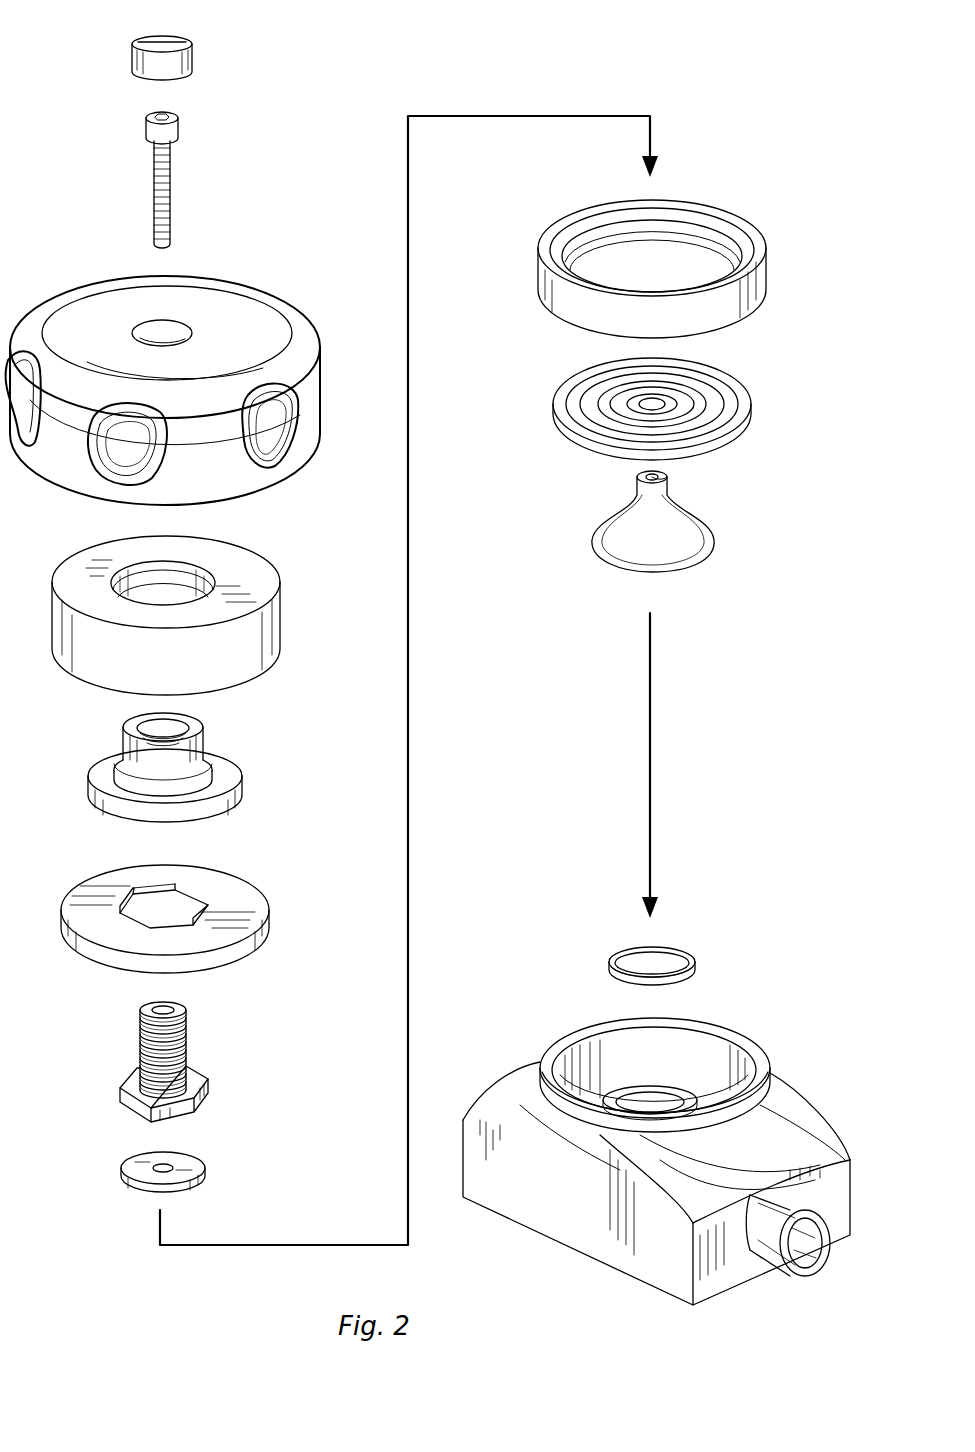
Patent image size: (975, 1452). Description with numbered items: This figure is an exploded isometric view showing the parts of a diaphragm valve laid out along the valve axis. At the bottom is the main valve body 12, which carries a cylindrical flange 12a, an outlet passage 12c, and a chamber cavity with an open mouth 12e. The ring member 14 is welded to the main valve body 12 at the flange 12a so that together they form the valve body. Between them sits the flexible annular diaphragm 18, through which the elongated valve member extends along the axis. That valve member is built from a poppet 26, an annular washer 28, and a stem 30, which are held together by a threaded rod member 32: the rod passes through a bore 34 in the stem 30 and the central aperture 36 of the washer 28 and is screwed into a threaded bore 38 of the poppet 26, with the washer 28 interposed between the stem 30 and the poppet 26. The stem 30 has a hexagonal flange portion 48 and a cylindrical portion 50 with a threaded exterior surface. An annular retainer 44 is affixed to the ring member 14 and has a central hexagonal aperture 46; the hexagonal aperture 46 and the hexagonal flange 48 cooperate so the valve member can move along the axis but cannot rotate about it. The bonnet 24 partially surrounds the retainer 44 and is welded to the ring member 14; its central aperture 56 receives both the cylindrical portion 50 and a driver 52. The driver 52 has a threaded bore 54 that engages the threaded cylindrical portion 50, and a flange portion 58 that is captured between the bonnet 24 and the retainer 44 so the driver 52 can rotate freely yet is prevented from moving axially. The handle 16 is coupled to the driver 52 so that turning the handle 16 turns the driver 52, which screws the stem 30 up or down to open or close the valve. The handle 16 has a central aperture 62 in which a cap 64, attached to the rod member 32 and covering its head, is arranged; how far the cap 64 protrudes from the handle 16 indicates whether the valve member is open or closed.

The main valve body 12 is at (660, 1145).
The cylindrical flange 12a is at (568, 1030).
The outlet passage 12c is at (800, 1275).
The open mouth 12e is at (700, 1040).
The ring member 14 is at (757, 283).
The handle 16 is at (179, 355).
The flexible annular diaphragm 18 is at (750, 420).
The bonnet 24 is at (189, 598).
The poppet 26 is at (666, 520).
The annular washer 28 is at (174, 1166).
The stem 30 is at (200, 1064).
The threaded rod member 32 is at (172, 168).
The bore 34 is at (160, 1006).
The central aperture 36 is at (162, 1164).
The threaded bore 38 is at (638, 468).
The annular retainer 44 is at (195, 901).
The central hexagonal aperture 46 is at (173, 915).
The hexagonal flange portion 48 is at (207, 1100).
The cylindrical portion 50 is at (198, 1048).
The driver 52 is at (189, 760).
The threaded bore 54 is at (155, 720).
The central aperture 56 is at (155, 565).
The flange portion 58 is at (95, 777).
The central aperture 62 is at (167, 325).
The cap 64 is at (175, 40).